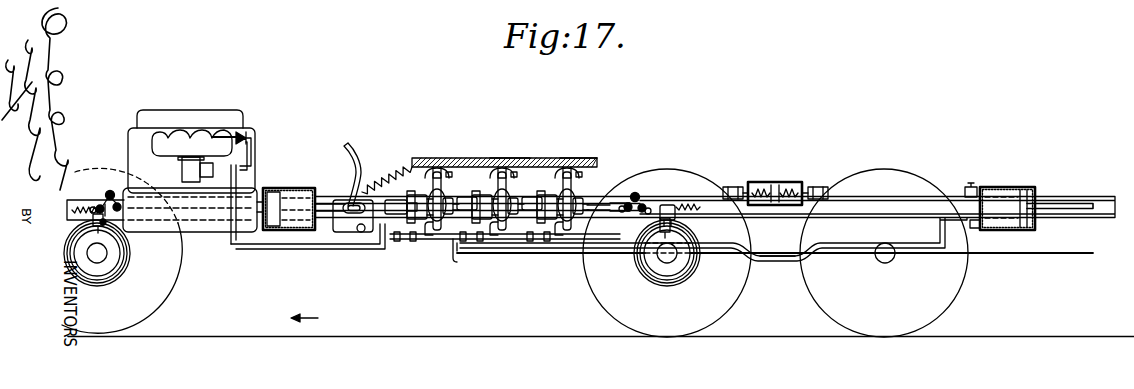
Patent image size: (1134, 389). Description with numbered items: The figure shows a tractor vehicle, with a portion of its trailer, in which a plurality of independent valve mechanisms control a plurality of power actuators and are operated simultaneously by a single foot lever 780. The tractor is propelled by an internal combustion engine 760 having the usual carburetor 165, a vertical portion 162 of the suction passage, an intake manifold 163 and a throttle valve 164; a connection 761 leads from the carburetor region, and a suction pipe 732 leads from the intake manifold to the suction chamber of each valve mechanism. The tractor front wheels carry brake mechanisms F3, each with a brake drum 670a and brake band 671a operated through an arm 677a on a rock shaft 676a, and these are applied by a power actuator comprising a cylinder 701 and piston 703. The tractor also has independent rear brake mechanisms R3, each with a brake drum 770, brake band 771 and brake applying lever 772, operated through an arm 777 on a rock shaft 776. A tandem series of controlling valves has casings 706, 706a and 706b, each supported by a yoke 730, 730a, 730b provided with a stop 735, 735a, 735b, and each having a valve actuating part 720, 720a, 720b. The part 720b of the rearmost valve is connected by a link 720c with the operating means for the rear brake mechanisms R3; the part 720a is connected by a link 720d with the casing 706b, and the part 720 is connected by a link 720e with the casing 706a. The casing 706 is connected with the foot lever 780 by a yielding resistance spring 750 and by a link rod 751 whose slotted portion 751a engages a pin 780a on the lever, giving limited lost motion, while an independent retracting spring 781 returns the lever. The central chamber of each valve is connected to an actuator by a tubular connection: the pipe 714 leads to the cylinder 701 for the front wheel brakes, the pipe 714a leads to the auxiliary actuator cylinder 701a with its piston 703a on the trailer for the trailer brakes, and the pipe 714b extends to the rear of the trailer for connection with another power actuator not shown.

The internal combustion engine 760 is at (158, 112).
The vertical portion of suction passage 162 is at (176, 166).
The intake manifold 163 is at (185, 137).
The throttle valve 164 is at (182, 177).
The carburetor 165 is at (241, 130).
The suction pipe 732 is at (252, 148).
The carburetor connection 761 is at (240, 176).
The brake drum 670a is at (97, 278).
The brake band 671a is at (128, 268).
The front wheel brake mechanisms F3 is at (132, 258).
The rock shaft 676a is at (110, 195).
The arm 677a is at (117, 204).
The piston 703 is at (266, 218).
The cylinder 701 is at (283, 234).
The slotted portion 751a is at (345, 216).
The link rod 751 is at (395, 212).
The pin 780a is at (352, 205).
The foot lever 780 is at (362, 183).
The retracting spring 781 is at (397, 175).
The stop 735 is at (446, 160).
The stop 735a is at (512, 166).
The stop 735b is at (580, 174).
The yoke 730 is at (438, 167).
The yoke 730a is at (501, 170).
The yoke 730b is at (566, 172).
The valve casing 706 is at (437, 226).
The valve casing 706a is at (502, 226).
The valve casing 706b is at (567, 226).
The yielding resistance spring 750 is at (420, 208).
The valve actuating part 720 is at (455, 204).
The valve actuating part 720a is at (522, 208).
The valve actuating part 720b is at (588, 213).
The link 720c is at (613, 205).
The link 720d is at (530, 218).
The link 720e is at (490, 216).
The pipe 714 is at (345, 240).
The pipe 714a is at (771, 246).
The pipe 714b is at (770, 262).
The brake band 771 is at (641, 272).
The brake drum 770 is at (667, 280).
The rear brake mechanisms R3 is at (702, 274).
The rock shaft 776 is at (641, 200).
The arm 777 is at (666, 204).
The brake applying lever 772 is at (676, 204).
The auxiliary actuator cylinder 701a is at (998, 186).
The piston 703a is at (1040, 190).